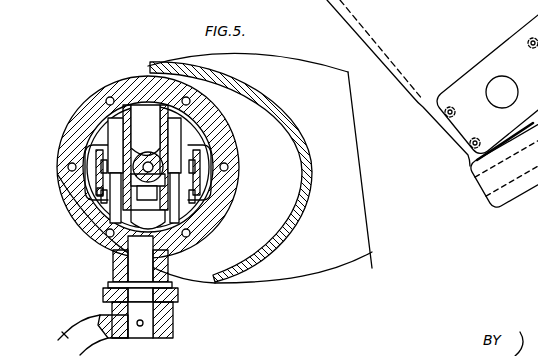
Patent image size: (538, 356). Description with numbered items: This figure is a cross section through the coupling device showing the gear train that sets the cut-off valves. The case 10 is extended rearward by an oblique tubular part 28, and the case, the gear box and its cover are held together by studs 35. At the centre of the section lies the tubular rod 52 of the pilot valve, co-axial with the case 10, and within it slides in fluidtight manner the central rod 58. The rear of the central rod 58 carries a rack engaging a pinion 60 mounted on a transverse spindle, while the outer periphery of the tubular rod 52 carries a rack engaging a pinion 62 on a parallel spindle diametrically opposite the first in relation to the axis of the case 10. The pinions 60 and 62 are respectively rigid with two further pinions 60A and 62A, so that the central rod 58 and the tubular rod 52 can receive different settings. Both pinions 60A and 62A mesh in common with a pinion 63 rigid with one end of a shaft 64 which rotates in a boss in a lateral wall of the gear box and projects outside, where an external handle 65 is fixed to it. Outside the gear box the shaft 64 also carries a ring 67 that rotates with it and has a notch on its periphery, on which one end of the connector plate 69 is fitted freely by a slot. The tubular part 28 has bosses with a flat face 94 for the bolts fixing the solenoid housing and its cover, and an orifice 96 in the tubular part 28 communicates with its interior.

The case 10 is at (95, 116).
The oblique tubular part 28 is at (350, 33).
The studs 35 is at (300, 148).
The tubular rod 52 is at (145, 158).
The central rod 58 is at (150, 166).
The pinion 60 is at (193, 167).
The pinion 60A is at (193, 193).
The pinion 62 is at (85, 157).
The pinion 62A is at (100, 193).
The pinion 63 is at (93, 217).
The shaft 64 is at (147, 325).
The external handle 65 is at (82, 340).
The ring 67 is at (127, 295).
The connector plate 69 is at (180, 296).
The flat face 94 is at (468, 72).
The orifice 96 is at (502, 76).